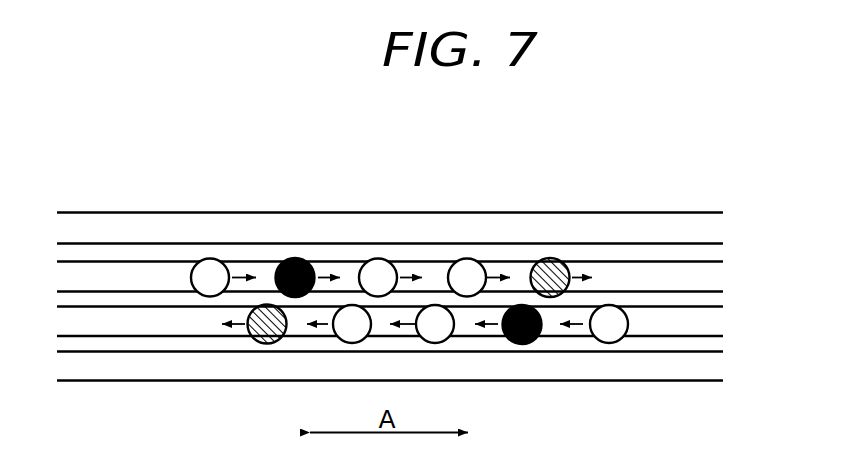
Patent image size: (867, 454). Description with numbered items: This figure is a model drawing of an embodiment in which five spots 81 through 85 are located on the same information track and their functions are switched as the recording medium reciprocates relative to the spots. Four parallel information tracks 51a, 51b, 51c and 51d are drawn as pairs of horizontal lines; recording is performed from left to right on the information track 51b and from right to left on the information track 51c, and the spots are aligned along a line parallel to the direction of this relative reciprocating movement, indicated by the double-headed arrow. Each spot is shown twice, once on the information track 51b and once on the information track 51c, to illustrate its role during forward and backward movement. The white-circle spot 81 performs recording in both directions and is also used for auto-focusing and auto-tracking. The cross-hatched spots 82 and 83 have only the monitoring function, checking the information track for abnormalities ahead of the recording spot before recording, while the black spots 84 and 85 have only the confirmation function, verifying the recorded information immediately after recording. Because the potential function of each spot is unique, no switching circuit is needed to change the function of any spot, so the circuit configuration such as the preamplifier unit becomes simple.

The information track 51a is at (703, 231).
The information track 51b is at (705, 278).
The information track 51c is at (703, 323).
The information track 51d is at (703, 367).
The spot 81 is at (435, 305).
The spot 82 is at (268, 305).
The spot 83 is at (608, 305).
The spot 84 is at (352, 305).
The spot 85 is at (520, 305).